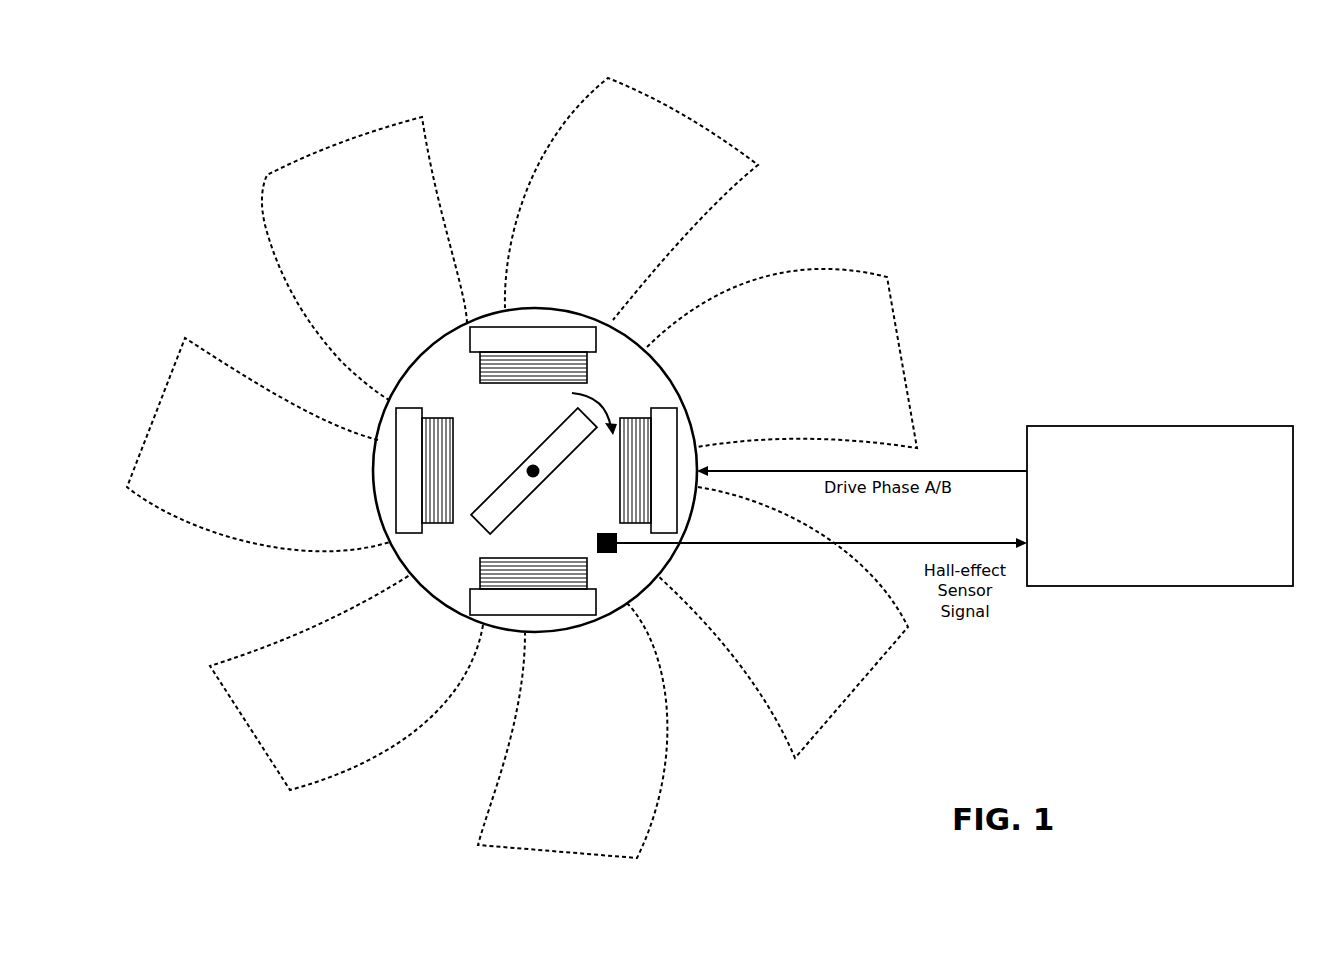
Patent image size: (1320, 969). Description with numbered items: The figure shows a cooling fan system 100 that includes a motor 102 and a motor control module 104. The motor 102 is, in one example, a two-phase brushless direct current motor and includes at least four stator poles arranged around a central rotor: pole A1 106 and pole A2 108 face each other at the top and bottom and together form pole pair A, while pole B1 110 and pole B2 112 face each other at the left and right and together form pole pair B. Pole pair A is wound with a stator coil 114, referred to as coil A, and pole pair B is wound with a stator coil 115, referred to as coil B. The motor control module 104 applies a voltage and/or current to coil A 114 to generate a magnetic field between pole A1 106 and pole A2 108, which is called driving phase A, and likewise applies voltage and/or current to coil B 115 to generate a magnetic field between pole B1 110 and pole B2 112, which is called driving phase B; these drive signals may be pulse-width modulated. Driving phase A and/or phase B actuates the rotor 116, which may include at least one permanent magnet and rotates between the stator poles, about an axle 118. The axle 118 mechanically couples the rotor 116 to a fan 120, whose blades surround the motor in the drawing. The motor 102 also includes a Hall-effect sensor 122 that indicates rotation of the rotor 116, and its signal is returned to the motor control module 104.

The cooling fan system 100 is at (214, 102).
The motor 102 is at (672, 380).
The motor control module 104 is at (1163, 426).
The pole A1 106 is at (470, 342).
The pole A2 108 is at (476, 598).
The pole B1 110 is at (414, 408).
The pole B2 112 is at (661, 408).
The stator coil (coil A) 114 is at (529, 384).
The stator coil (coil B) 115 is at (620, 471).
The rotor 116 is at (532, 498).
The axle 118 is at (527, 470).
The fan 120 is at (678, 114).
The Hall-effect sensor 122 is at (604, 554).